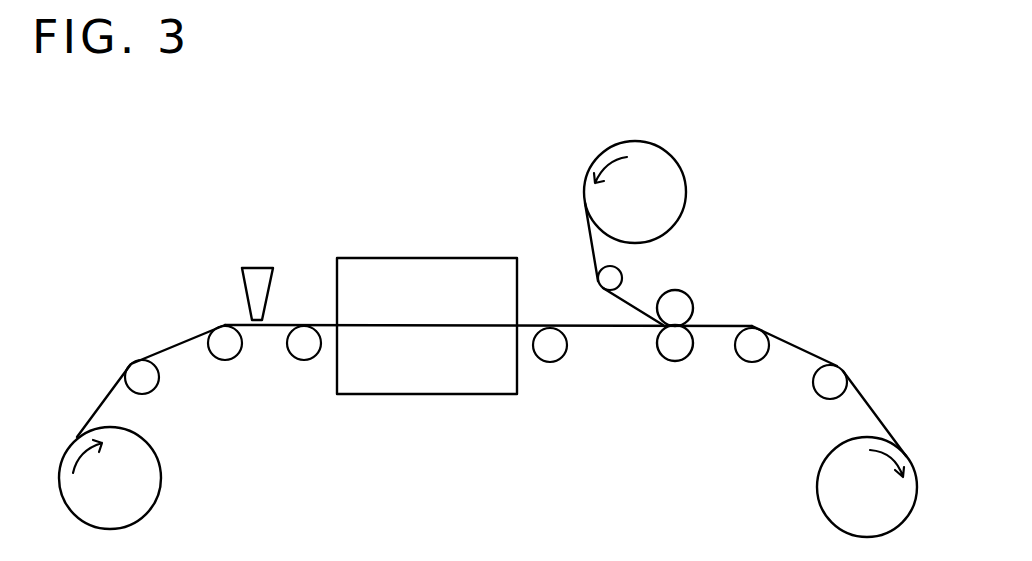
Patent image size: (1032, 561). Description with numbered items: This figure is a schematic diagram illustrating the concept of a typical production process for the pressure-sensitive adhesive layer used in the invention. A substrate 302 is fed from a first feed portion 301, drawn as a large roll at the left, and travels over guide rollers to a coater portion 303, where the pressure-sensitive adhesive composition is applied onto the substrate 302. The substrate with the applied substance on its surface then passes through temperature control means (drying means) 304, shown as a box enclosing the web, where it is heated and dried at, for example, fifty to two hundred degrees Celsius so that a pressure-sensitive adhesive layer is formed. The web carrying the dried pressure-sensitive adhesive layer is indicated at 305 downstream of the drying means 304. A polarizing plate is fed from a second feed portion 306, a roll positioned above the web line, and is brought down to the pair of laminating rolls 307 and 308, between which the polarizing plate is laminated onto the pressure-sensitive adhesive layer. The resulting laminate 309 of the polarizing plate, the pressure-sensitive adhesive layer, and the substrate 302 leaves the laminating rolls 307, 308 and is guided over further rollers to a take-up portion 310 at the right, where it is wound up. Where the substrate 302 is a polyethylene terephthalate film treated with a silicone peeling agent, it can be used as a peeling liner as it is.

The first feed portion 301 is at (137, 480).
The substrate 302 is at (163, 347).
The coater portion 303 is at (255, 290).
The temperature control means (drying means) 304 is at (407, 272).
The coated web 305 is at (588, 325).
The second feed portion 306 is at (665, 180).
The laminating roll 307 is at (680, 305).
The laminating roll 308 is at (672, 350).
The laminate 309 is at (797, 342).
The take-up portion 310 is at (838, 483).